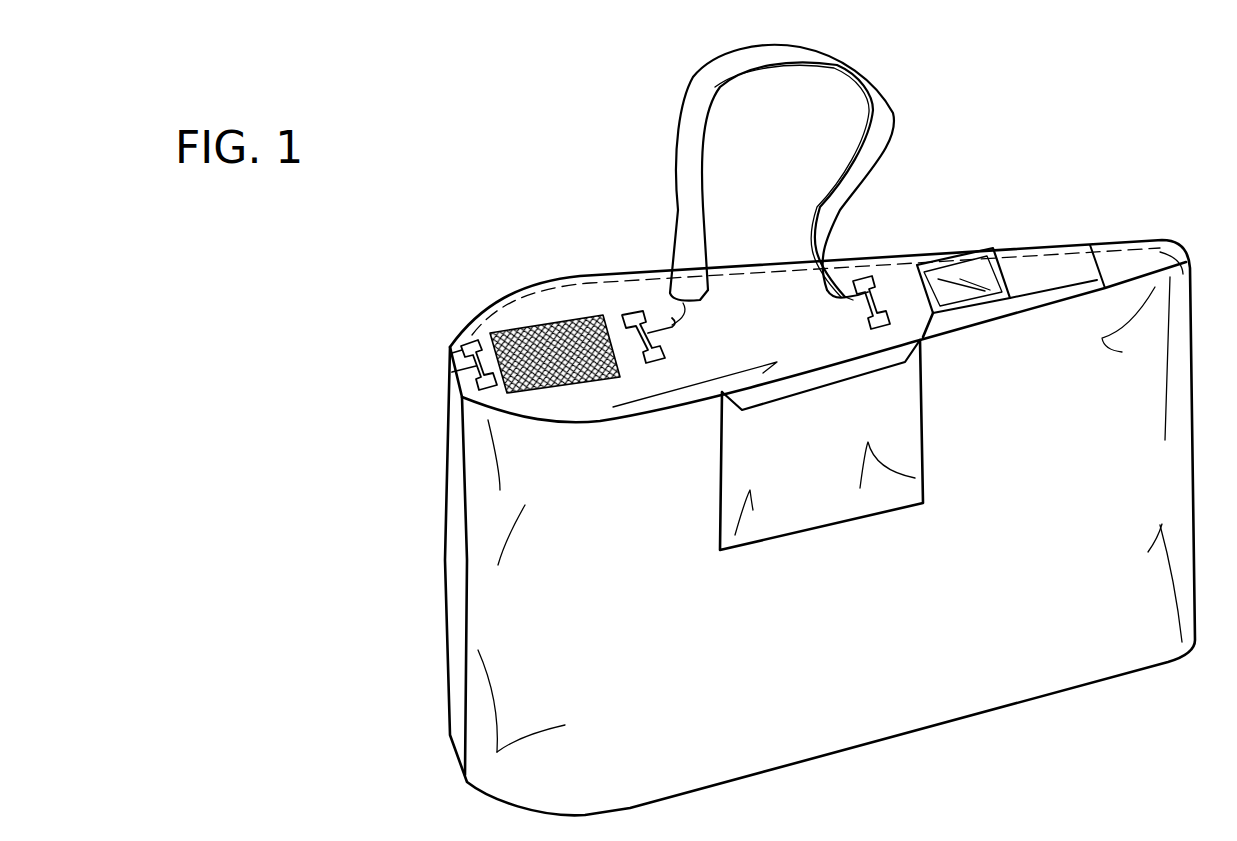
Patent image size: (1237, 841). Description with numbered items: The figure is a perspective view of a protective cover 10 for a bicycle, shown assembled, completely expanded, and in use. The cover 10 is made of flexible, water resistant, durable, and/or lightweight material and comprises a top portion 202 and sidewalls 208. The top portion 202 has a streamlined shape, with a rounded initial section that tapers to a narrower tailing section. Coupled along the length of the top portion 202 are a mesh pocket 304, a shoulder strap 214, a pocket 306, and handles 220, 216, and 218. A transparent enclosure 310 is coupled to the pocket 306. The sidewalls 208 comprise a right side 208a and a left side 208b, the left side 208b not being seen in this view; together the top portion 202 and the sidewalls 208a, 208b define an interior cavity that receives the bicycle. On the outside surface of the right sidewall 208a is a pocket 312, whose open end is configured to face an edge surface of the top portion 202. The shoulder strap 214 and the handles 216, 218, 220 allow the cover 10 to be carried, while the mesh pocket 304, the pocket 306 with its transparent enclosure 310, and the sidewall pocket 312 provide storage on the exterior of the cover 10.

The protective cover 10 is at (1103, 78).
The top portion 202 is at (797, 327).
The sidewalls 208 is at (332, 545).
The right side 208a is at (500, 625).
The left side 208b is at (487, 574).
The shoulder strap 214 is at (707, 78).
The handle 216 is at (632, 313).
The handle 218 is at (870, 282).
The handle 220 is at (462, 342).
The mesh pocket 304 is at (545, 330).
The pocket 306 is at (1045, 262).
The transparent enclosure 310 is at (970, 270).
The pocket 312 is at (840, 460).